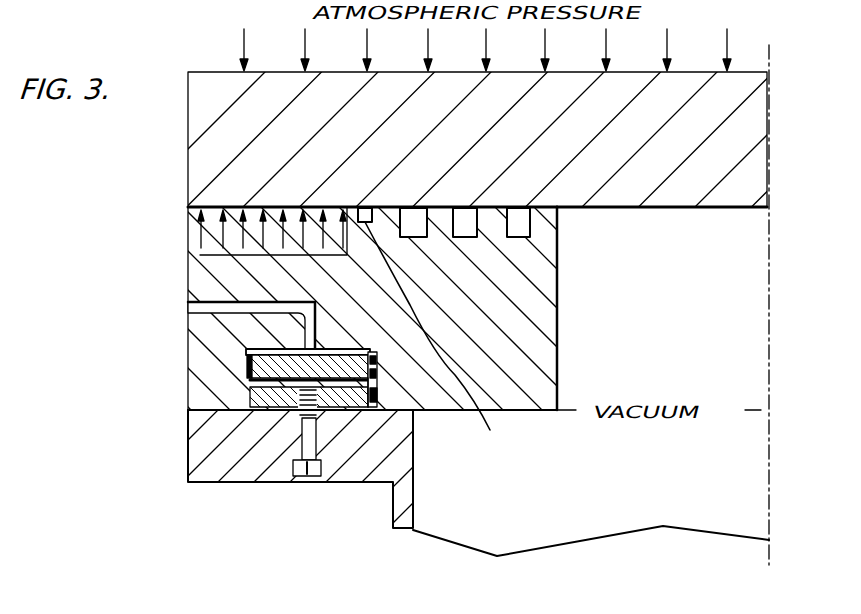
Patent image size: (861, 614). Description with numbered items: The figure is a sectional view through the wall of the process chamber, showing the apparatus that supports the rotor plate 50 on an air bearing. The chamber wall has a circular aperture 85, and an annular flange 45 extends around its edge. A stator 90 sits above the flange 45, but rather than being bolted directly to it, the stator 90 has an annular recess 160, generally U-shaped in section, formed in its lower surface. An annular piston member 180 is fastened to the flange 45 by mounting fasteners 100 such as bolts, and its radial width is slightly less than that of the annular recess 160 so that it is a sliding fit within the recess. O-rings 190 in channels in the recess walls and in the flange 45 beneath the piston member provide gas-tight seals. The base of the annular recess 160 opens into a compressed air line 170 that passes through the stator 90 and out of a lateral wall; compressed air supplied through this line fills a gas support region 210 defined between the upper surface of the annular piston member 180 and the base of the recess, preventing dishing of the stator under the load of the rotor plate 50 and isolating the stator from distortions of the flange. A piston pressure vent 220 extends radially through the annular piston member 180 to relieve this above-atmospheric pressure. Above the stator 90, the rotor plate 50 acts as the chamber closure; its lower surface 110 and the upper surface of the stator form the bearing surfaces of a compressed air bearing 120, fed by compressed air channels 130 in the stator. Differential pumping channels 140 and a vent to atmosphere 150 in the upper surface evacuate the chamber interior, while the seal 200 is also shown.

The rotor plate 50 is at (495, 116).
The lower surface of the rotor plate 110 is at (662, 241).
The compressed air bearing 120 is at (368, 300).
The compressed air channels 130 is at (233, 244).
The differential pumping channels 140 is at (494, 243).
The vent to atmosphere 150 is at (445, 338).
The compressed air line 170 is at (212, 317).
The annular recess 160 is at (210, 338).
The stator 90 is at (262, 381).
The gas support region 210 is at (148, 363).
The seal 200 is at (218, 386).
The piston pressure vent 220 is at (253, 400).
The annular piston member 180 is at (203, 434).
The flange 45 is at (303, 470).
The mounting fastener 100 is at (305, 479).
The O-rings 190 is at (446, 433).
The circular aperture 85 is at (591, 543).